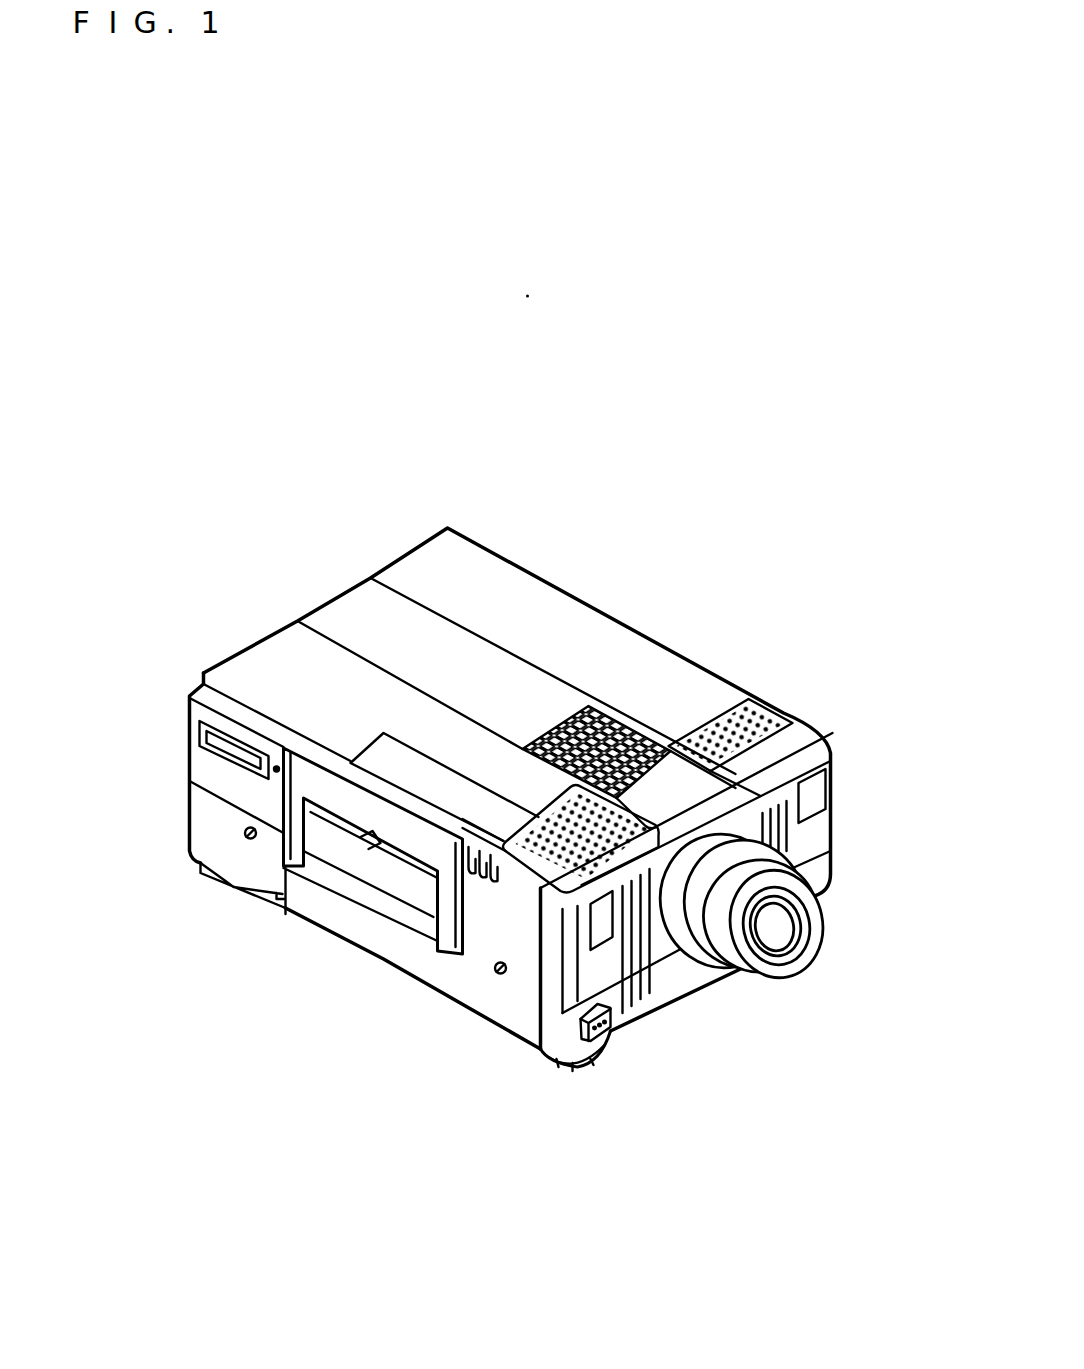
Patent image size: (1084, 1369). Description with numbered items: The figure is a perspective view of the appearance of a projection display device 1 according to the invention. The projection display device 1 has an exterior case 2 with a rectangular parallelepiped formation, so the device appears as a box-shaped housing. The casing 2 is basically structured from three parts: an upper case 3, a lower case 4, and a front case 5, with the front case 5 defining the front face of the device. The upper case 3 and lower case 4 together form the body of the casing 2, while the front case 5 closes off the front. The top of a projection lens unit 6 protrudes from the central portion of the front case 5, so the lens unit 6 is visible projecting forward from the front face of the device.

The projection display device 1 is at (614, 561).
The exterior case 2 is at (562, 1200).
The upper case 3 is at (498, 920).
The lower case 4 is at (523, 1020).
The front case 5 is at (612, 1008).
The projection lens unit 6 is at (758, 880).